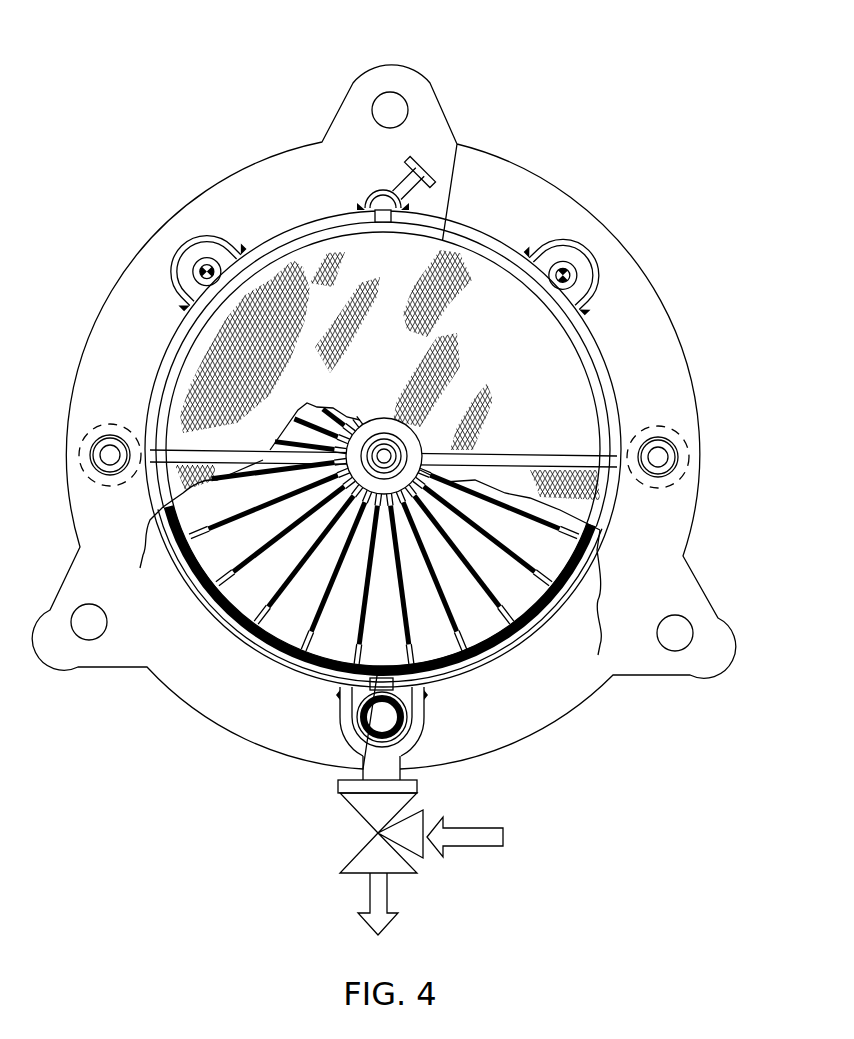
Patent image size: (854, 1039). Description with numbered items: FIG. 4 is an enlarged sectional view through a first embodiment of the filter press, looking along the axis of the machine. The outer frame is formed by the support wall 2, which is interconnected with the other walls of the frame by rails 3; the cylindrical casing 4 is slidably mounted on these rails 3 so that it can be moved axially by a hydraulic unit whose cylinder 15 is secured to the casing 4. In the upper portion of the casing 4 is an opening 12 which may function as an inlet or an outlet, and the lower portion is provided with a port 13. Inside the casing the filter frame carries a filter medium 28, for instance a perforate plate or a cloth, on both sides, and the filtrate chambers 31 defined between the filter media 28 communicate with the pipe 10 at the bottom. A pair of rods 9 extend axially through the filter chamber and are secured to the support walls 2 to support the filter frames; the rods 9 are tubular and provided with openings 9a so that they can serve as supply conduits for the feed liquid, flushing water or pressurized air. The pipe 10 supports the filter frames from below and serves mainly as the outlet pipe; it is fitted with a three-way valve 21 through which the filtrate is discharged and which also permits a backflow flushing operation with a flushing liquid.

The support wall 2 is at (567, 673).
The rails 3 is at (388, 114).
The casing 4 is at (287, 240).
The rods 9 is at (207, 270).
The openings 9a is at (197, 337).
The pipe 10 is at (380, 714).
The opening 12 is at (427, 167).
The port 13 is at (375, 765).
The cylinder 15 is at (110, 455).
The three-way valve 21 is at (367, 860).
The filter medium 28 is at (350, 320).
The filtrate chambers 31 is at (253, 583).